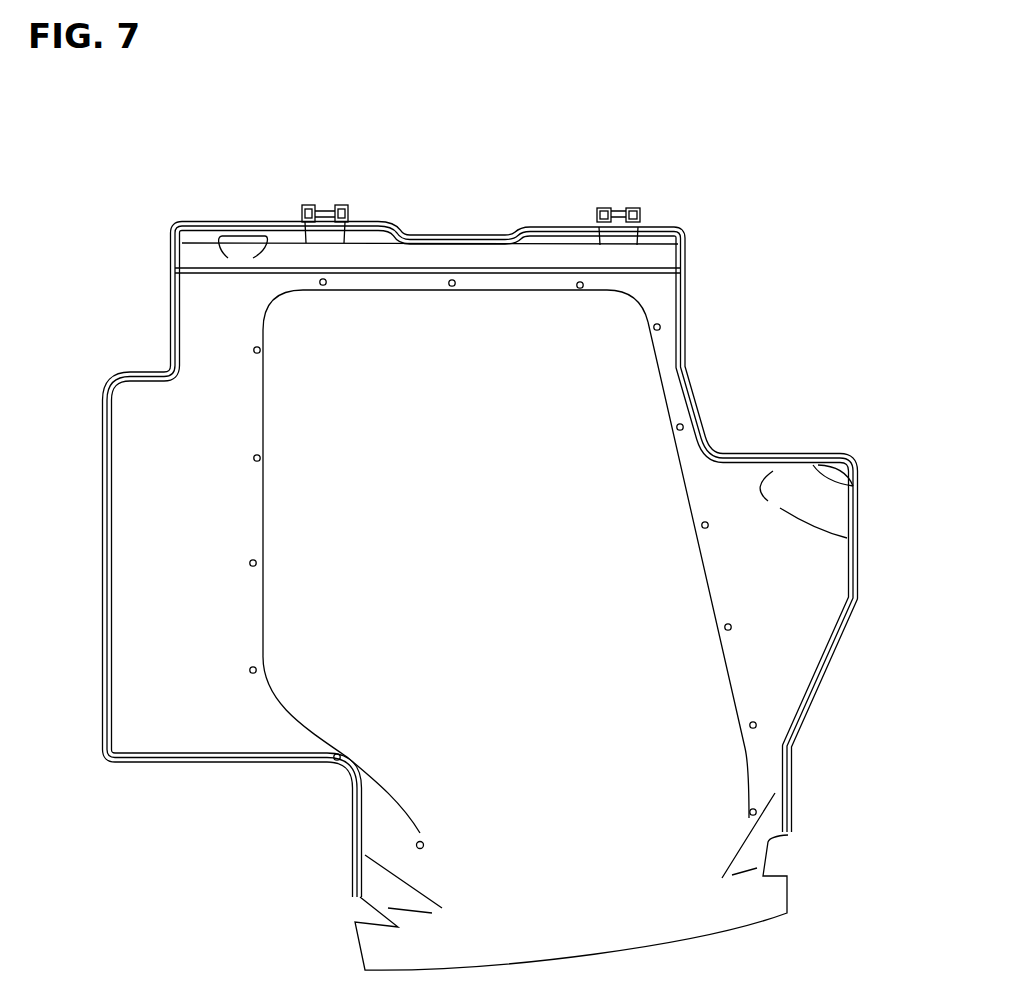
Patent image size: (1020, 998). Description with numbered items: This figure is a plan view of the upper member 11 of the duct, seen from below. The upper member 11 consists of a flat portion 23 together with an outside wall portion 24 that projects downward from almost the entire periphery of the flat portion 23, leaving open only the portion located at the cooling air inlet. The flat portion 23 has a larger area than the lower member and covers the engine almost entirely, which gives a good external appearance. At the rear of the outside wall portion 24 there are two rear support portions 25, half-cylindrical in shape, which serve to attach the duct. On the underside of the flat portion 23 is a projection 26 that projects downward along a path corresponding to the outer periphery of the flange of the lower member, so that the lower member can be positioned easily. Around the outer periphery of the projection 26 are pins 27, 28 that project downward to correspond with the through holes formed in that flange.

The upper member 11 is at (557, 117).
The flat portion 23 is at (597, 488).
The outside wall portion 24 is at (845, 483).
The rear support portions 25 is at (348, 207).
The projection 26 is at (710, 583).
The pins 27 is at (580, 284).
The pins 28 is at (337, 757).